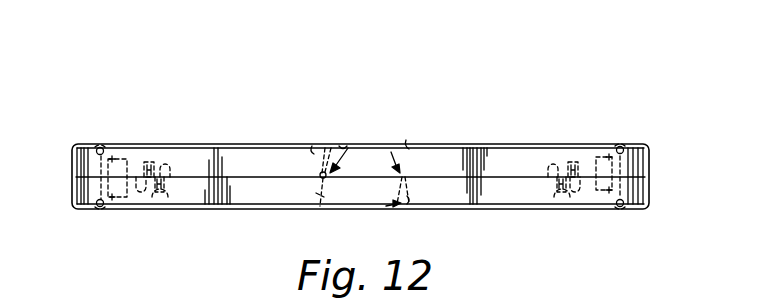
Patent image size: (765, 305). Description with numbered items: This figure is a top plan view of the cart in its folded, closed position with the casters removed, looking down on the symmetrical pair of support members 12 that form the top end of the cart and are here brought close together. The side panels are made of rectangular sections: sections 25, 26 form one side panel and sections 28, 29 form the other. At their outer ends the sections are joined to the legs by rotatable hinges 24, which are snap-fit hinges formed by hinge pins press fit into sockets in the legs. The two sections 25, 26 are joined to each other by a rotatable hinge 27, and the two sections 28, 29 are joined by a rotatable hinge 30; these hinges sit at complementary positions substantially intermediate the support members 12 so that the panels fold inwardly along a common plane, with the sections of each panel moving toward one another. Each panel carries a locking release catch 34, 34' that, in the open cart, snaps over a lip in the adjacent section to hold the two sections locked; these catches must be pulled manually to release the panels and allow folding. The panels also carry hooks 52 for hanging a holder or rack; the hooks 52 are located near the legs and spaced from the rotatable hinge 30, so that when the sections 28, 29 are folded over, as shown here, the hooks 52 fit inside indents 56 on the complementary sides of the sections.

The support member 12 is at (251, 142).
The rotatable hinge 24 is at (100, 141).
The side panel section 25 is at (324, 208).
The side panel section 26 is at (313, 146).
The rotatable hinge 27 is at (347, 147).
The side panel section 28 is at (409, 218).
The side panel section 29 is at (408, 146).
The rotatable hinge 30 is at (397, 150).
The locking release catch 34 is at (334, 139).
The locking release catch 34' is at (376, 225).
The hook 52 is at (149, 161).
The indent 56 is at (160, 166).